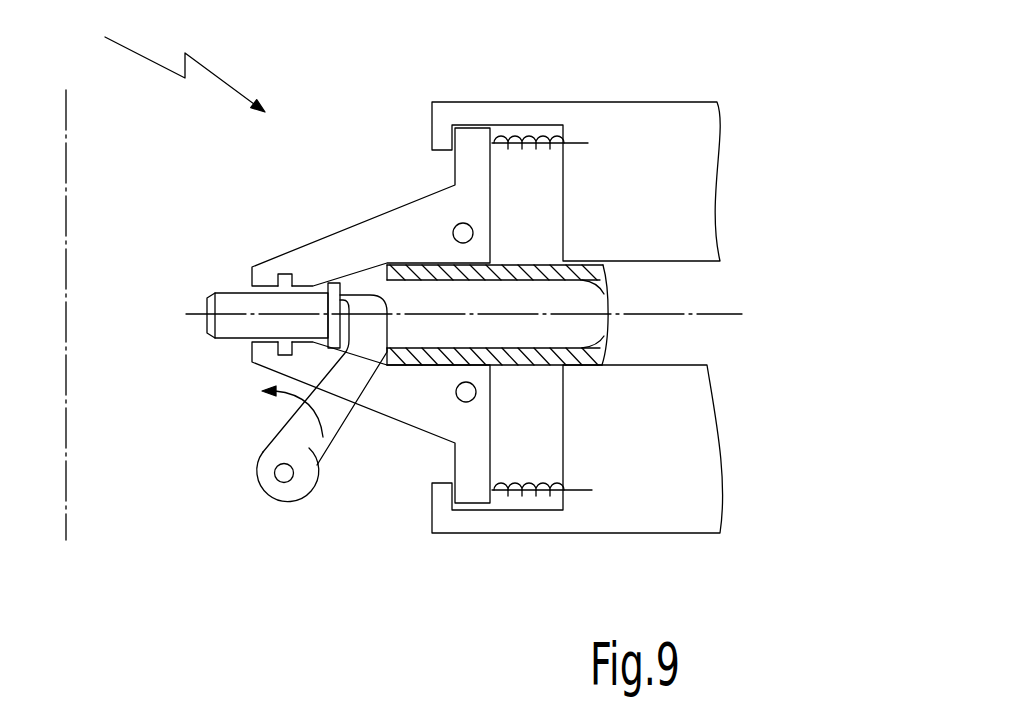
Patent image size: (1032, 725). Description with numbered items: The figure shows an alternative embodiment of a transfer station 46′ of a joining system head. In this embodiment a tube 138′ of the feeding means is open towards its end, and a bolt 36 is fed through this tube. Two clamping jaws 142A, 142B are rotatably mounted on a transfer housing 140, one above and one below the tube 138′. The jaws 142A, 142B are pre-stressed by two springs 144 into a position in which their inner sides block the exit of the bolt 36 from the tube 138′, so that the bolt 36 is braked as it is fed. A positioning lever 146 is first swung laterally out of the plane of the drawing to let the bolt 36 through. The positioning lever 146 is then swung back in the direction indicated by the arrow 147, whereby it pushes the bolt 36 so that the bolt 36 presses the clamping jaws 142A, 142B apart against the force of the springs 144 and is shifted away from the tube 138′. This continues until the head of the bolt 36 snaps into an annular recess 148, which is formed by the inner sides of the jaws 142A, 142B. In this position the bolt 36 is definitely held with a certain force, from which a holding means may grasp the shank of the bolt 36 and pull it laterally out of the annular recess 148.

The transfer station 46′ is at (106, 1).
The bolt 36 is at (223, 302).
The tube 138′ is at (603, 292).
The transfer housing 140 is at (650, 483).
The clamping jaw 142A is at (366, 250).
The clamping jaw 142B is at (412, 400).
The spring 144 is at (530, 137).
The positioning lever 146 is at (322, 470).
The swinging direction of positioning lever 147 is at (275, 428).
The annular recess 148 is at (283, 275).